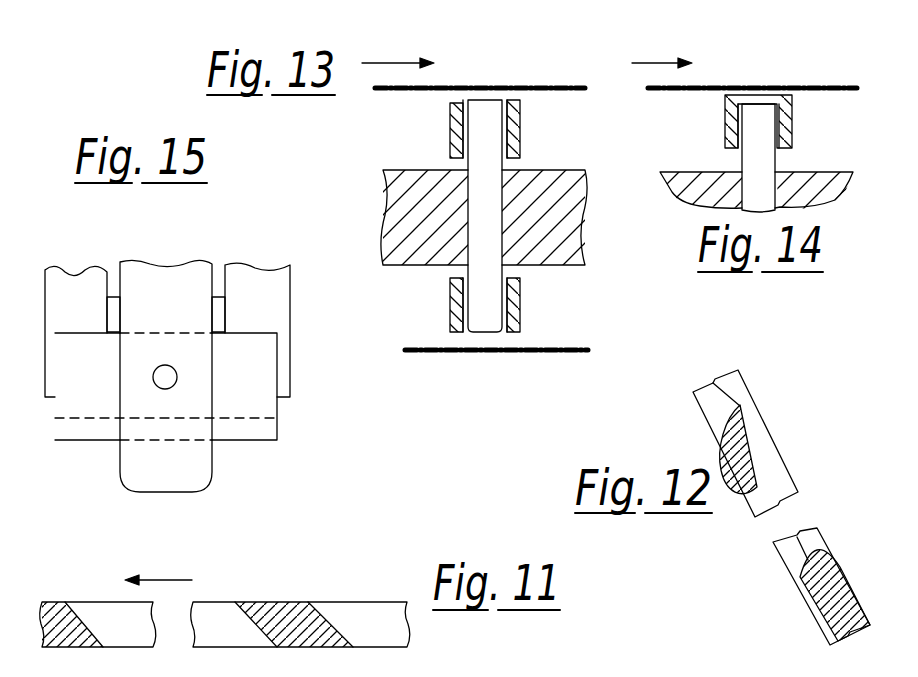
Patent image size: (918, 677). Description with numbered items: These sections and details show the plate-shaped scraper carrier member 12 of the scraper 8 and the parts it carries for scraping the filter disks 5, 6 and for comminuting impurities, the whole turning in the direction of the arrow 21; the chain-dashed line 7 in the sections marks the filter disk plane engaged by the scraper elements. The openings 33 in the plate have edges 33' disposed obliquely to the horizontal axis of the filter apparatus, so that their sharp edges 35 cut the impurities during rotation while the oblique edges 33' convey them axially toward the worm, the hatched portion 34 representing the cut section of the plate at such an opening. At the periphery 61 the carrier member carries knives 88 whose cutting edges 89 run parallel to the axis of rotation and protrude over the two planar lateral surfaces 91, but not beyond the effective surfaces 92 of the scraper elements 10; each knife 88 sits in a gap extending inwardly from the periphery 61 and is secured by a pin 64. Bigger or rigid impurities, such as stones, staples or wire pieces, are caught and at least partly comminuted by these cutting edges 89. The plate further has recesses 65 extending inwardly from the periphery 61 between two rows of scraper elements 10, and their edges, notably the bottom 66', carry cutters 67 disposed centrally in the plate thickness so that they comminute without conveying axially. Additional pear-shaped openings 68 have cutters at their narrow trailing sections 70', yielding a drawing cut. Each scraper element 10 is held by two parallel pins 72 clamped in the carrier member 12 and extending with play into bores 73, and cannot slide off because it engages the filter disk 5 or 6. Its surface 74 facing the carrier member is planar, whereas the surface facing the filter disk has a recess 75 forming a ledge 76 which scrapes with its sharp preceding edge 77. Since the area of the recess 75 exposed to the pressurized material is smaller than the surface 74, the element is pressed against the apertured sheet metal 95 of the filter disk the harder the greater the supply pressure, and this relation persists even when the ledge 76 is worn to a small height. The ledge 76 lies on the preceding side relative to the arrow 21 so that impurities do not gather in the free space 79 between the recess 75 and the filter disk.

In FIG. 13, the filter disk 5 is at (568, 84).
In FIG. 14, the filter disk 5 is at (843, 84).
In FIG. 13, the filter disk 6 is at (558, 354).
In FIG. 13, the strip 7 is at (447, 86).
In FIG. 14, the strip 7 is at (708, 86).
In FIG. 15, the scraper 8 is at (178, 275).
In FIG. 13, the scraper element 10 is at (520, 152).
In FIG. 14, the scraper element 10 is at (790, 142).
In FIG. 15, the scraper element 10 is at (65, 282).
In FIG. 13, the scraper carrier member 12 is at (580, 210).
In FIG. 14, the scraper carrier member 12 is at (818, 195).
In FIG. 12, the scraper carrier member 12 is at (806, 485).
In FIG. 11, the scraper carrier member 12 is at (340, 594).
In FIG. 13, the direction of rotation arrow 21 is at (376, 63).
In FIG. 14, the direction of rotation arrow 21 is at (637, 63).
In FIG. 11, the direction of rotation arrow 21 is at (156, 580).
In FIG. 11, the opening 33 is at (218, 583).
In FIG. 11, the edge of opening 33' is at (74, 600).
In FIG. 11, the hatched cavity 34 is at (270, 607).
In FIG. 11, the sharp edge 35 is at (237, 602).
In FIG. 15, the periphery of scraper 61 is at (173, 493).
In FIG. 15, the pin 64 is at (173, 366).
In FIG. 12, the recess 65 is at (733, 374).
In FIG. 12, the bottom of recess 66' is at (684, 424).
In FIG. 12, the cutter 67 is at (745, 405).
In FIG. 12, the additional opening 68 is at (760, 503).
In FIG. 12, the cutting section of opening edge 70' is at (800, 595).
In FIG. 13, the pin 72 is at (482, 300).
In FIG. 14, the pin 72 is at (760, 110).
In FIG. 15, the pin 72 is at (217, 310).
In FIG. 13, the bore 73 is at (512, 128).
In FIG. 14, the bore 73 is at (780, 125).
In FIG. 13, the surface of scraper element 74 is at (452, 165).
In FIG. 14, the surface of scraper element 74 is at (727, 158).
In FIG. 13, the recess 75 is at (455, 100).
In FIG. 13, the ledge 76 is at (520, 86).
In FIG. 14, the ledge 76 is at (790, 86).
In FIG. 13, the preceding edge 77 is at (508, 90).
In FIG. 14, the preceding edge 77 is at (777, 92).
In FIG. 13, the free space 79 is at (483, 100).
In FIG. 13, the knife 88 is at (452, 6).
In FIG. 15, the knife 88 is at (263, 403).
In FIG. 15, the cutting edge 89 is at (248, 441).
In FIG. 15, the planar lateral surface 91 is at (118, 263).
In FIG. 15, the effective surface 92 is at (47, 360).
In FIG. 13, the apertured sheet metal 95 is at (378, 92).
In FIG. 14, the apertured sheet metal 95 is at (668, 92).